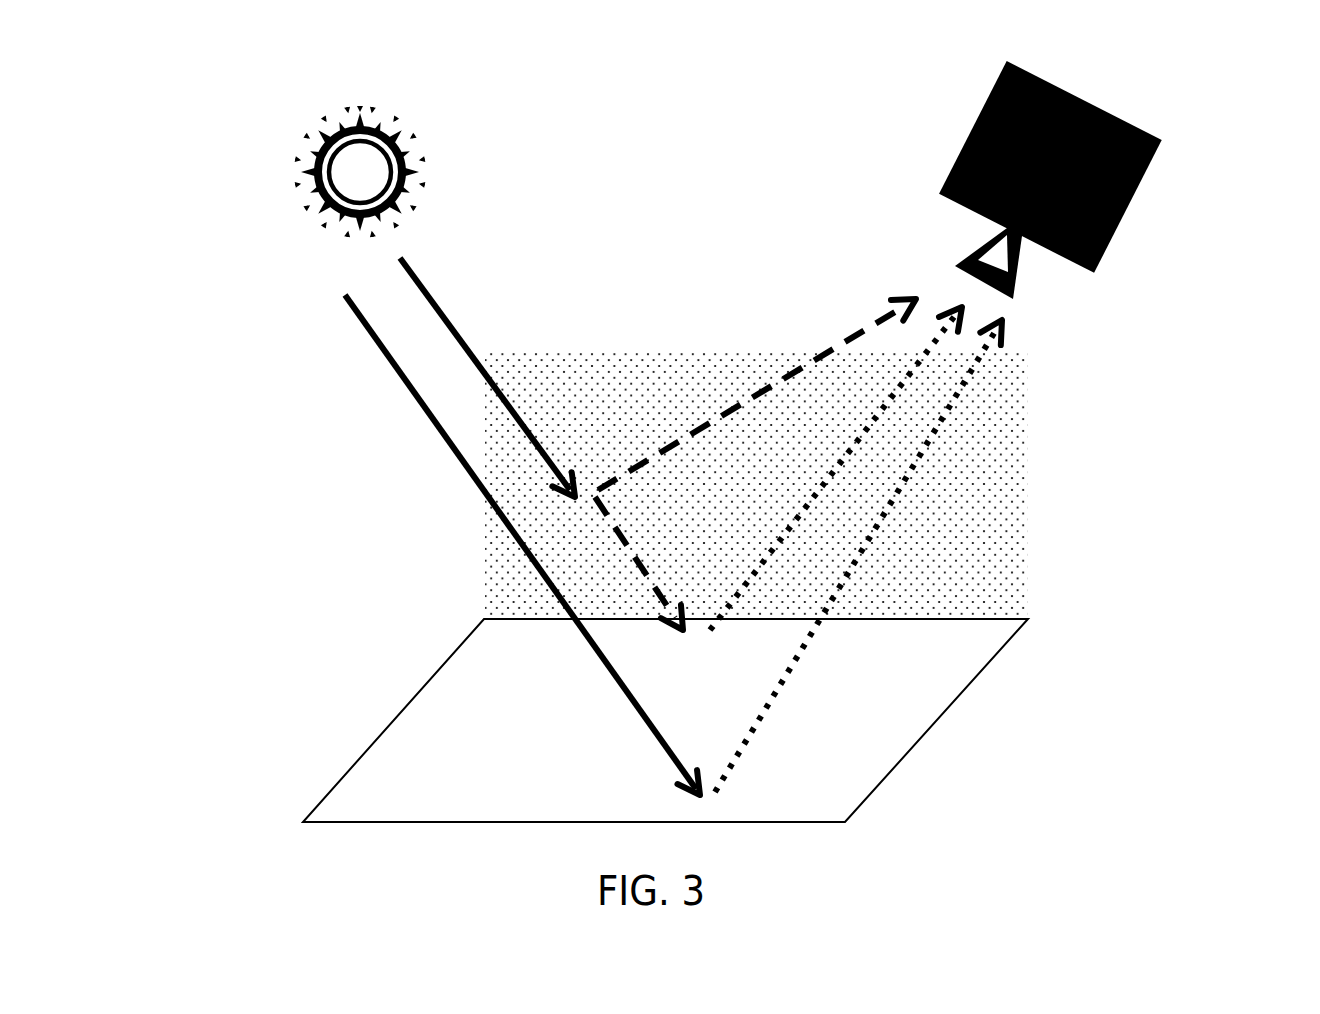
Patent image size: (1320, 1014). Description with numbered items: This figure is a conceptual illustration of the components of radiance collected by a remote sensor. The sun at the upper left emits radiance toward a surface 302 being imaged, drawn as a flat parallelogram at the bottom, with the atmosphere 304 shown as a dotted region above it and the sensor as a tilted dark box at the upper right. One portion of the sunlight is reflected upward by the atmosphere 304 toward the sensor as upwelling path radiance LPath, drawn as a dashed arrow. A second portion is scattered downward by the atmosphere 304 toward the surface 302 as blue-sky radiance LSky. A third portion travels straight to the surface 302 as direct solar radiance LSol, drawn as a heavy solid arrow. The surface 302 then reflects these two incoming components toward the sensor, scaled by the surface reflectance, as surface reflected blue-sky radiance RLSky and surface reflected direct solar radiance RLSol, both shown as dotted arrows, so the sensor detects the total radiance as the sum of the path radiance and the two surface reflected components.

The surface 302 is at (632, 356).
The atmosphere 304 is at (960, 128).
The direct solar radiance LSol is at (439, 530).
The upwelling path radiance LPath is at (760, 350).
The blue-sky radiance LSky is at (522, 567).
The surface reflected blue-sky radiance RLSky is at (978, 465).
The surface reflected direct solar radiance RLSol is at (966, 553).